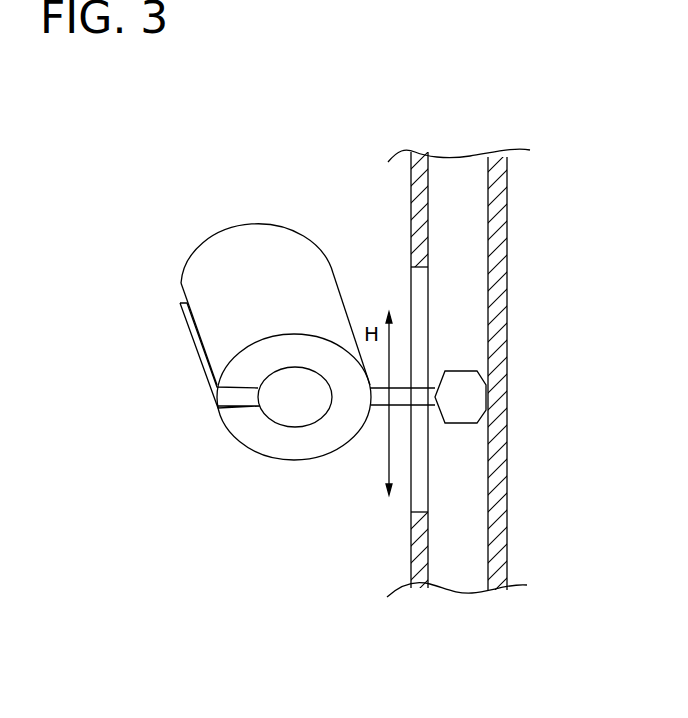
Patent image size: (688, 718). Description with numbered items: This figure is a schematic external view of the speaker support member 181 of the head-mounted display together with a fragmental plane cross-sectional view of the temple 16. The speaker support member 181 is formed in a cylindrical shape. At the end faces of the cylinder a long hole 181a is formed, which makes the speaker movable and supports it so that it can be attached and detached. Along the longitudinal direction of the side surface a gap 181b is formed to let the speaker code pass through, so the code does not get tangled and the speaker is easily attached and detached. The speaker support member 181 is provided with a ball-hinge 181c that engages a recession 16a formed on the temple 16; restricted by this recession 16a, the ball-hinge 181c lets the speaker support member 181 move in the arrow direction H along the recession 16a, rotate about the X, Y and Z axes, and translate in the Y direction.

The temple 16 is at (503, 240).
The recession 16a is at (478, 302).
The speaker support member 181 is at (227, 258).
The long hole 181a is at (297, 412).
The gap 181b is at (193, 336).
The ball-hinge 181c is at (480, 402).